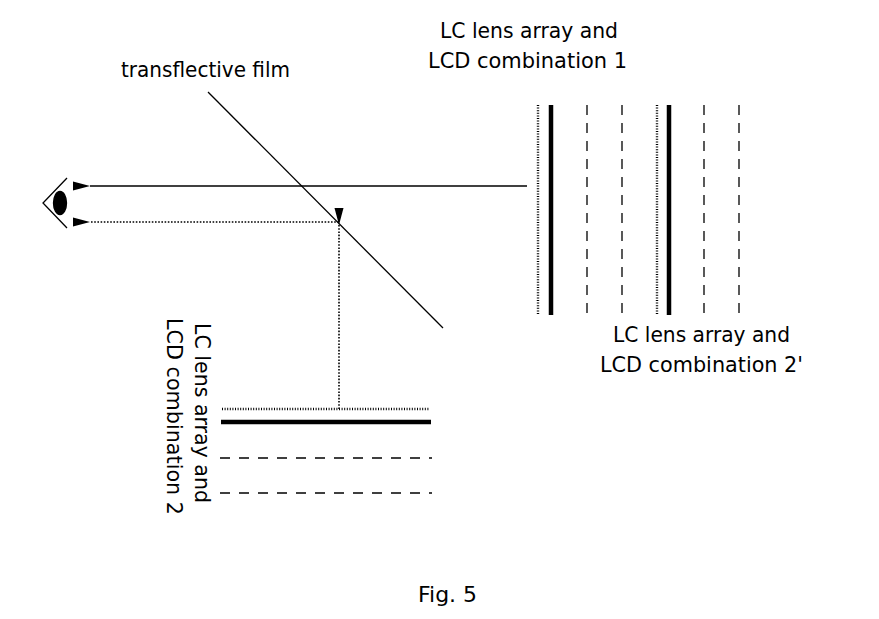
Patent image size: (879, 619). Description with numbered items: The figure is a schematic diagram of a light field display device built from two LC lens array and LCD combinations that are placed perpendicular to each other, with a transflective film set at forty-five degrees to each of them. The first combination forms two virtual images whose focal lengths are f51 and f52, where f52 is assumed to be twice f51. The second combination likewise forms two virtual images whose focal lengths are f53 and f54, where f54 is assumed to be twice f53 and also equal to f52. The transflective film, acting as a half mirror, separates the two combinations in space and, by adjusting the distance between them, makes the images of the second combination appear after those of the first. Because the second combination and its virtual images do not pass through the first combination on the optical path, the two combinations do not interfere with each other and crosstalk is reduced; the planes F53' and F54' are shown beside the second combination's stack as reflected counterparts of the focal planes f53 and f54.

The focal length of first virtual image of LC lens array and LCD combination 1 f51 is at (580, 220).
The focal length of second virtual image of LC lens array and LCD combination 1 f52 is at (623, 199).
The focal plane F53' of LC lens array and LCD combination 2' F53' is at (700, 200).
The focal plane F54' of LC lens array and LCD combination 2' F54' is at (745, 200).
The focal length of first virtual image of LC lens array and LCD combination 2 f53 is at (341, 458).
The focal length of second virtual image of LC lens array and LCD combination 2 f54 is at (341, 493).